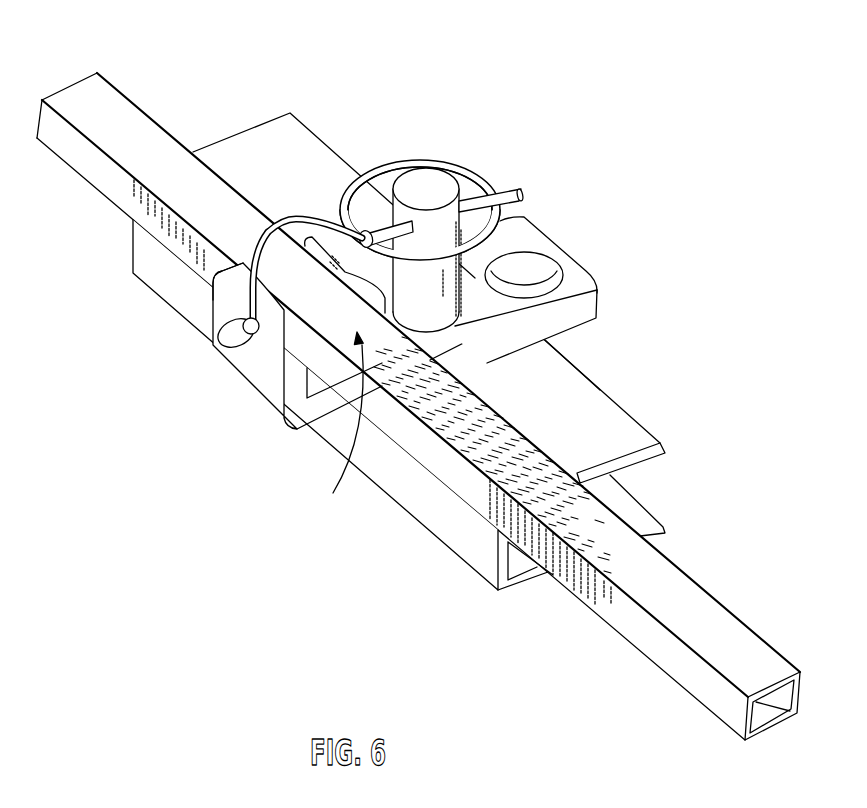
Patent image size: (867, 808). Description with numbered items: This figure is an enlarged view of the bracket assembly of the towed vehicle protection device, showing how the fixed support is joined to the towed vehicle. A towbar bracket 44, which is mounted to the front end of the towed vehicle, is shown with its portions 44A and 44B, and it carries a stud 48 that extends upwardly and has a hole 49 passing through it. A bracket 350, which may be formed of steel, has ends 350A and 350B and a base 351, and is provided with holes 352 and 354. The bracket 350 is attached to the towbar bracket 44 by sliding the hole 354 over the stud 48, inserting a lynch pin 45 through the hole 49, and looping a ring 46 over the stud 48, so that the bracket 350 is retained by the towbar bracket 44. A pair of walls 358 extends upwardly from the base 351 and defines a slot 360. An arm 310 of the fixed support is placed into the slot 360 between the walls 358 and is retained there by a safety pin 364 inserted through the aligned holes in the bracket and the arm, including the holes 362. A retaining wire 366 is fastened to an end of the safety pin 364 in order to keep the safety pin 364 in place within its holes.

The arm 310 is at (738, 595).
The towbar bracket 44 is at (672, 440).
The upper plate of bracket 44A is at (295, 140).
The lower channel of bracket 44B is at (527, 587).
The lynch pin 45 is at (512, 178).
The ring 46 is at (469, 182).
The stud 48 is at (432, 183).
The hole 49 is at (395, 212).
The bracket 350 is at (612, 327).
The end 350A is at (587, 267).
The end 350B is at (240, 385).
The base 351 is at (537, 227).
The hole 352 is at (540, 265).
The hole 354 is at (560, 360).
The wall 358 is at (212, 308).
The slot 360 is at (338, 426).
The hole 362 is at (266, 360).
The safety pin 364 is at (233, 337).
The retaining wire 366 is at (293, 207).